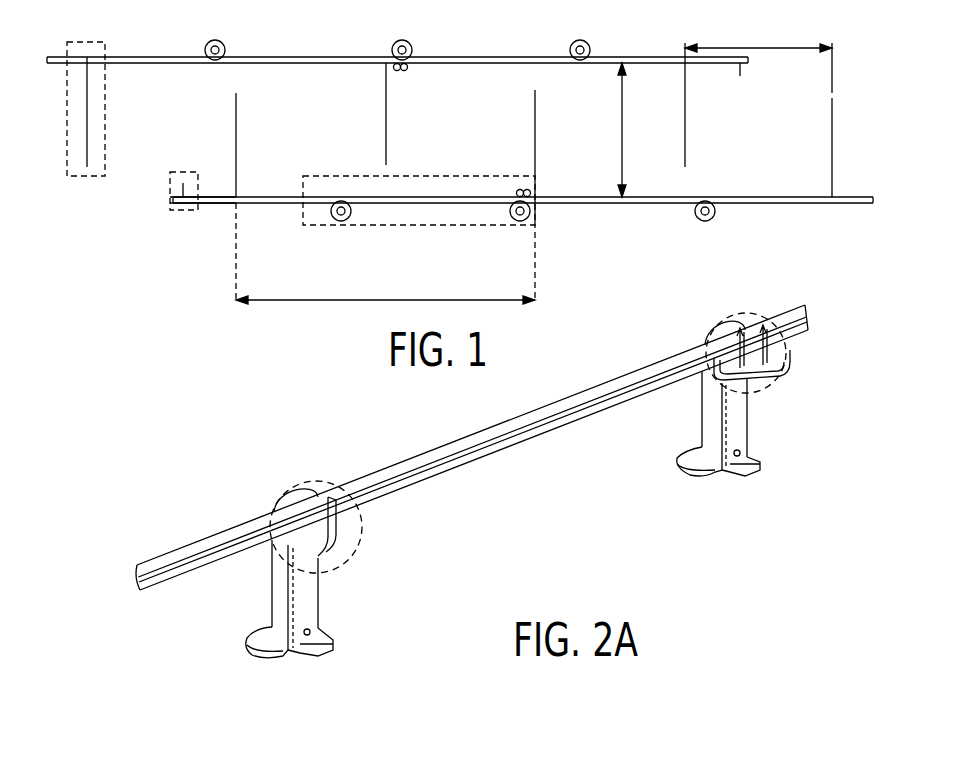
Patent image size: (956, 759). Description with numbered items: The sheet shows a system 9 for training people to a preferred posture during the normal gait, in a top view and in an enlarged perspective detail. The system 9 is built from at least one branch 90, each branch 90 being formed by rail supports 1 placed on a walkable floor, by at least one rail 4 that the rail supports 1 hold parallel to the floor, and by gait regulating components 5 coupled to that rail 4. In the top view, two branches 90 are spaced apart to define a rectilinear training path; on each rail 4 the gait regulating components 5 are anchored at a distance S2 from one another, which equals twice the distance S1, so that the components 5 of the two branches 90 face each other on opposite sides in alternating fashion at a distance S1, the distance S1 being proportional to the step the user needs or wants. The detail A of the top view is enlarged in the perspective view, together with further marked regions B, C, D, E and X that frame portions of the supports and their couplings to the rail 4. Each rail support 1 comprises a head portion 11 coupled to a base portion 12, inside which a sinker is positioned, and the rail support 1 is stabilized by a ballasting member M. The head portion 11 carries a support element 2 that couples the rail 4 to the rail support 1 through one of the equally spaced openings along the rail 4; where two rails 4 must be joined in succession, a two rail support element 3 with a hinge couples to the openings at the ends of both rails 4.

In FIG. 1, the rail support 1 is at (205, 50).
In FIG. 2A, the rail support 1 is at (254, 678).
In FIG. 1, the support element 2 is at (600, 132).
In FIG. 2A, the support element 2 is at (340, 497).
In FIG. 2A, the two rail support element 3 is at (795, 348).
In FIG. 1, the rail 4 is at (315, 63).
In FIG. 2A, the rail 4 is at (482, 446).
In FIG. 1, the gait regulating component 5 is at (832, 155).
In FIG. 1, the system 9 is at (851, 136).
In FIG. 2A, the head portion 11 is at (279, 552).
In FIG. 2A, the base portion 12 is at (310, 596).
In FIG. 1, the branch 90 is at (218, 197).
In FIG. 1, the detail A is at (292, 234).
In FIG. 1, the detail region B is at (68, 188).
In FIG. 2A, the detail region C is at (360, 567).
In FIG. 2A, the detail region D is at (800, 391).
In FIG. 1, the detail region E is at (169, 223).
In FIG. 2A, the support post X is at (701, 417).
In FIG. 2A, the ballasting member M is at (748, 452).
In FIG. 1, the distance S1 is at (385, 281).
In FIG. 1, the distance S2 is at (758, 32).